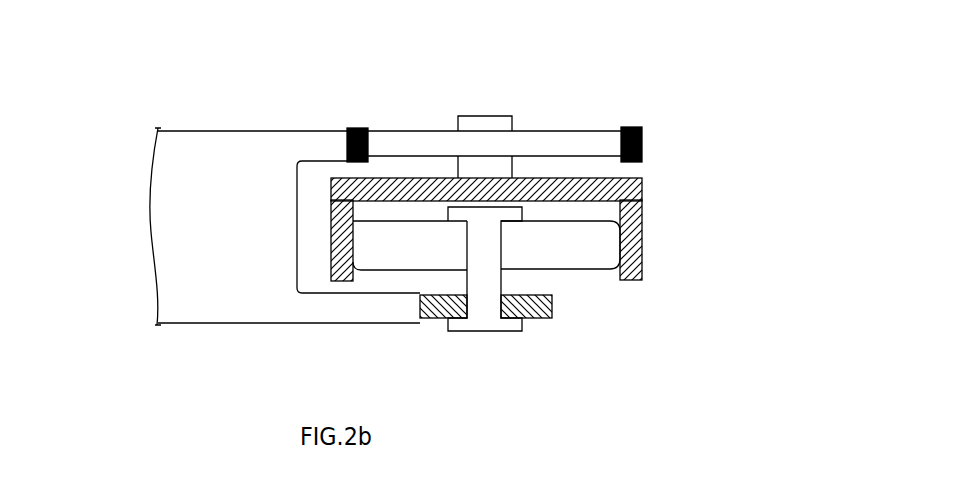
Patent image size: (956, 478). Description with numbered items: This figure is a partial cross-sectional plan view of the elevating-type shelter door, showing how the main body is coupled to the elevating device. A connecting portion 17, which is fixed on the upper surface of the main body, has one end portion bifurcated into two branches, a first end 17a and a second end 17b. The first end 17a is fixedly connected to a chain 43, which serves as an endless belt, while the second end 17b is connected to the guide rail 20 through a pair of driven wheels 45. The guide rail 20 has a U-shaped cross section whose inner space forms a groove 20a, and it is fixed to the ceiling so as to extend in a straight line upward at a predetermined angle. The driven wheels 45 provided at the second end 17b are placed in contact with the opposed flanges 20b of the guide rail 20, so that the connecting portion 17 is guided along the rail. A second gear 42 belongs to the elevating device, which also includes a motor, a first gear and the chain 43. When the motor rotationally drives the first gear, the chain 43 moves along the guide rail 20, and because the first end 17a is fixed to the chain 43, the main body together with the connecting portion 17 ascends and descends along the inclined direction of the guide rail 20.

The connecting portion 17 is at (232, 129).
The first end 17a is at (325, 129).
The second end 17b is at (398, 324).
The guide rail 20 is at (583, 178).
The groove 20a is at (398, 214).
The flange 20b is at (331, 228).
The second gear 42 is at (540, 130).
The chain 43 is at (643, 136).
The driven wheel 45 is at (582, 272).